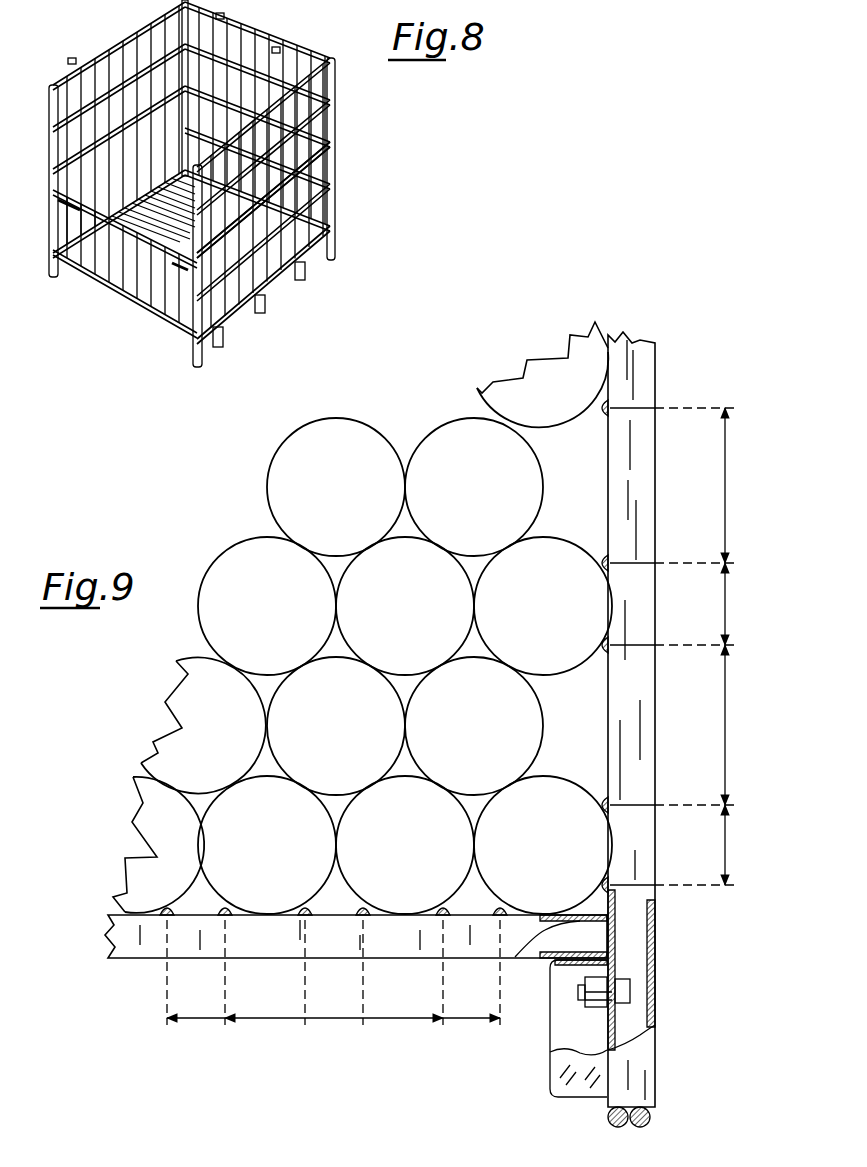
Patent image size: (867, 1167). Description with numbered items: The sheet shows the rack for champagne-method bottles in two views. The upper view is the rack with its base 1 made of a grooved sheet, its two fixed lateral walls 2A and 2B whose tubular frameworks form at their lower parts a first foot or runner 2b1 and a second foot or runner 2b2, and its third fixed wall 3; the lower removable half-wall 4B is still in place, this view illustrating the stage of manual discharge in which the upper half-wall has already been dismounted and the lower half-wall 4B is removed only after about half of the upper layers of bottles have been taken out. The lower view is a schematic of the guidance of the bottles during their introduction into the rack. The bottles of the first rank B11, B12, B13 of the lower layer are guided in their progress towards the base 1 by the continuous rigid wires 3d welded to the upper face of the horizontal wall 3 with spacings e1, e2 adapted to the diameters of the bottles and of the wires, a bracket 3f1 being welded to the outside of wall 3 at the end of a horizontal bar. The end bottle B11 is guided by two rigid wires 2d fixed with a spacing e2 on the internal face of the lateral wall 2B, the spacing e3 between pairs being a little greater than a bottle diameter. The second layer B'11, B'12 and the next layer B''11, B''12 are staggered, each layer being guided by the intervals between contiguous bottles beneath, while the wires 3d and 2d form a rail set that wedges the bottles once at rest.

In FIG. 8, the base 1 is at (152, 213).
In FIG. 8, the fixed lateral wall 2A is at (274, 208).
In FIG. 8, the fixed lateral wall 2B is at (110, 83).
In FIG. 9, the fixed lateral wall 2B is at (658, 684).
In FIG. 8, the third fixed wall 3 is at (245, 66).
In FIG. 9, the third fixed wall 3 is at (257, 966).
In FIG. 8, the lower removable half-wall 4B is at (143, 282).
In FIG. 8, the first foot or runner 2b1 is at (246, 330).
In FIG. 8, the second foot or runner 2b2 is at (333, 137).
In FIG. 9, the rigid vertical wires 2d is at (613, 640).
In FIG. 9, the vertical metallic rods 3d is at (170, 915).
In FIG. 9, the bracket 3f1 is at (562, 1036).
In FIG. 9, the end bottle of the first rank B11 is at (543, 845).
In FIG. 9, the bottle of the first rank B12 is at (405, 845).
In FIG. 9, the bottle of the first rank B13 is at (267, 845).
In FIG. 9, the bottle of the second layer B'11 is at (474, 726).
In FIG. 9, the bottle of the second layer B'12 is at (336, 726).
In FIG. 9, the bottle of the third layer B''11 is at (543, 606).
In FIG. 9, the bottle of the third layer B''12 is at (405, 606).
In FIG. 9, the spacing e1 is at (333, 1033).
In FIG. 9, the spacing e2 is at (446, 806).
In FIG. 9, the spacing e3 is at (672, 646).